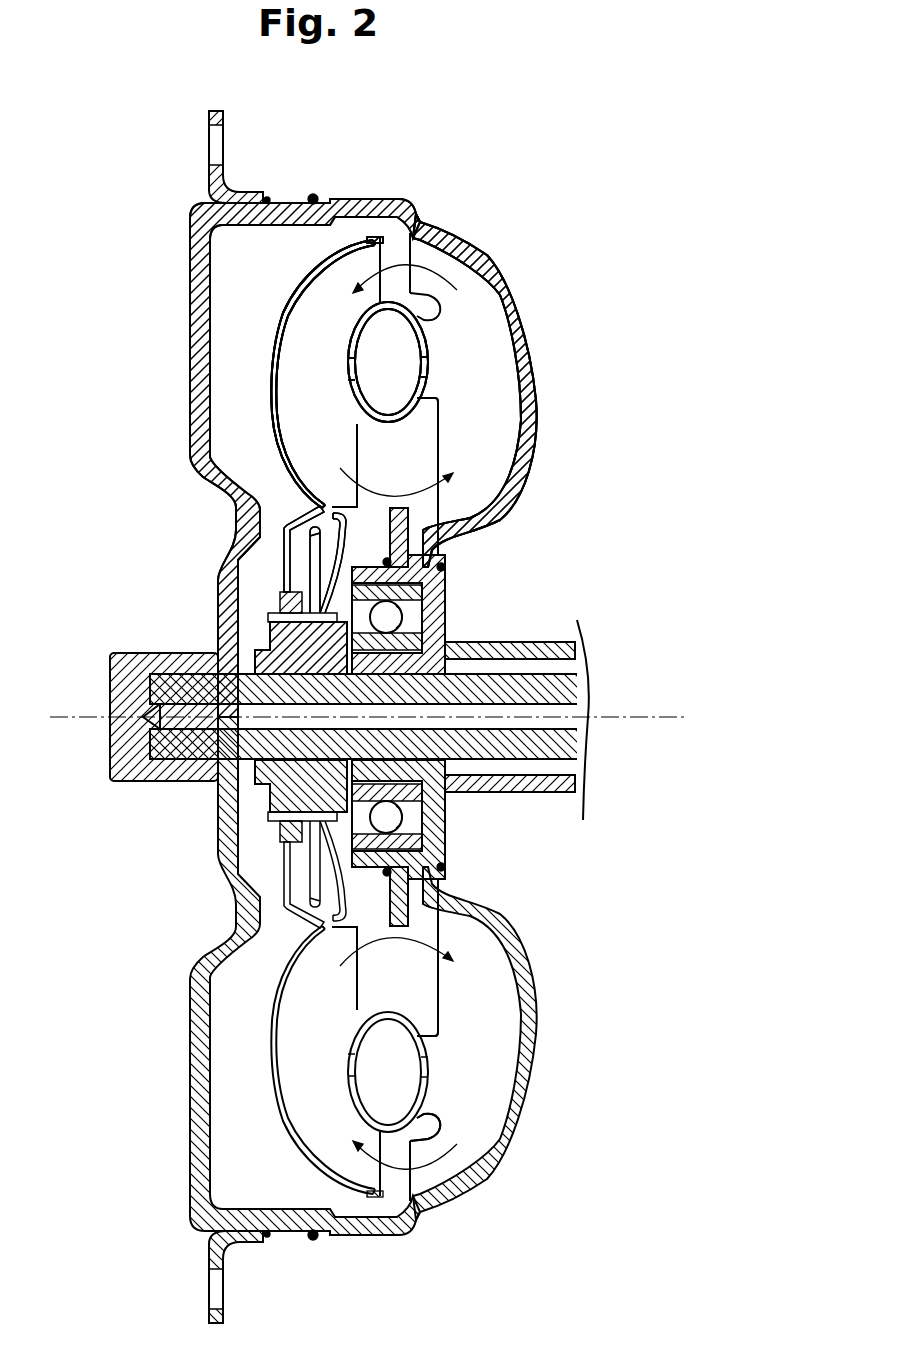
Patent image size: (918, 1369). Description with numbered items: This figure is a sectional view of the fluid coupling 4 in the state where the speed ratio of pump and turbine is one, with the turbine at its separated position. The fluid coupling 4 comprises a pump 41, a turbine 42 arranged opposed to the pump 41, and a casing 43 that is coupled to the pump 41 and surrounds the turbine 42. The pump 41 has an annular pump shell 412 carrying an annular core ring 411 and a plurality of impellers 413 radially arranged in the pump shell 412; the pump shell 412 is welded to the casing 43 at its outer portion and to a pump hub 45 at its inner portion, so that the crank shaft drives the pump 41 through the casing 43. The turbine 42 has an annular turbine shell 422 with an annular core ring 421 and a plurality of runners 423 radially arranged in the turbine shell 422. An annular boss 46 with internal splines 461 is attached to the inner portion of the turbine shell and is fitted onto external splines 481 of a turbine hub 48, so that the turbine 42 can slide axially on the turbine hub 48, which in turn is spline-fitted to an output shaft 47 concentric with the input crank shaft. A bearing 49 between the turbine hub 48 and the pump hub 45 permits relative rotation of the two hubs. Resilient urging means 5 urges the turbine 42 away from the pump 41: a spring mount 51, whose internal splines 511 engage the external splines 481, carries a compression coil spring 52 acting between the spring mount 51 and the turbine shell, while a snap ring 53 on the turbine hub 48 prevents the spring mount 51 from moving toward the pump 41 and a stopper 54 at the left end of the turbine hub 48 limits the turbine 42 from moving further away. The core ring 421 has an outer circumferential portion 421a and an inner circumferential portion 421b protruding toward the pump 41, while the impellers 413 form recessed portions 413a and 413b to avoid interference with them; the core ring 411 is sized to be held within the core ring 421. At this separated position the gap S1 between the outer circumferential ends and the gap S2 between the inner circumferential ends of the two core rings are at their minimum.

The fluid coupling 4 is at (468, 208).
The pump 41 is at (487, 248).
The core ring 411 is at (432, 345).
The pump shell 412 is at (536, 383).
The impellers 413 is at (488, 463).
The recessed portion 413a is at (440, 320).
The recessed portion 413b is at (440, 402).
The turbine 42 is at (280, 289).
The core ring 421 is at (290, 333).
The outer circumferential portion 421a is at (455, 290).
The inner circumferential portion 421b is at (443, 433).
The turbine shell 422 is at (275, 372).
The runners 423 is at (296, 429).
The casing 43 is at (193, 303).
The pump hub 45 is at (433, 595).
The boss 46 is at (292, 603).
The internal splines 461 is at (275, 637).
The output shaft 47 is at (530, 755).
The turbine hub 48 is at (215, 659).
The external splines 481 is at (290, 575).
The bearing 49 is at (428, 620).
The resilient urging means 5 is at (271, 497).
The spring mount 51 is at (300, 562).
The internal splines 511 is at (283, 676).
The compression coil spring 52 is at (283, 518).
The snap ring 53 is at (320, 810).
The stopper 54 is at (272, 616).
The gap S1 is at (424, 1117).
The gap S2 is at (410, 1023).